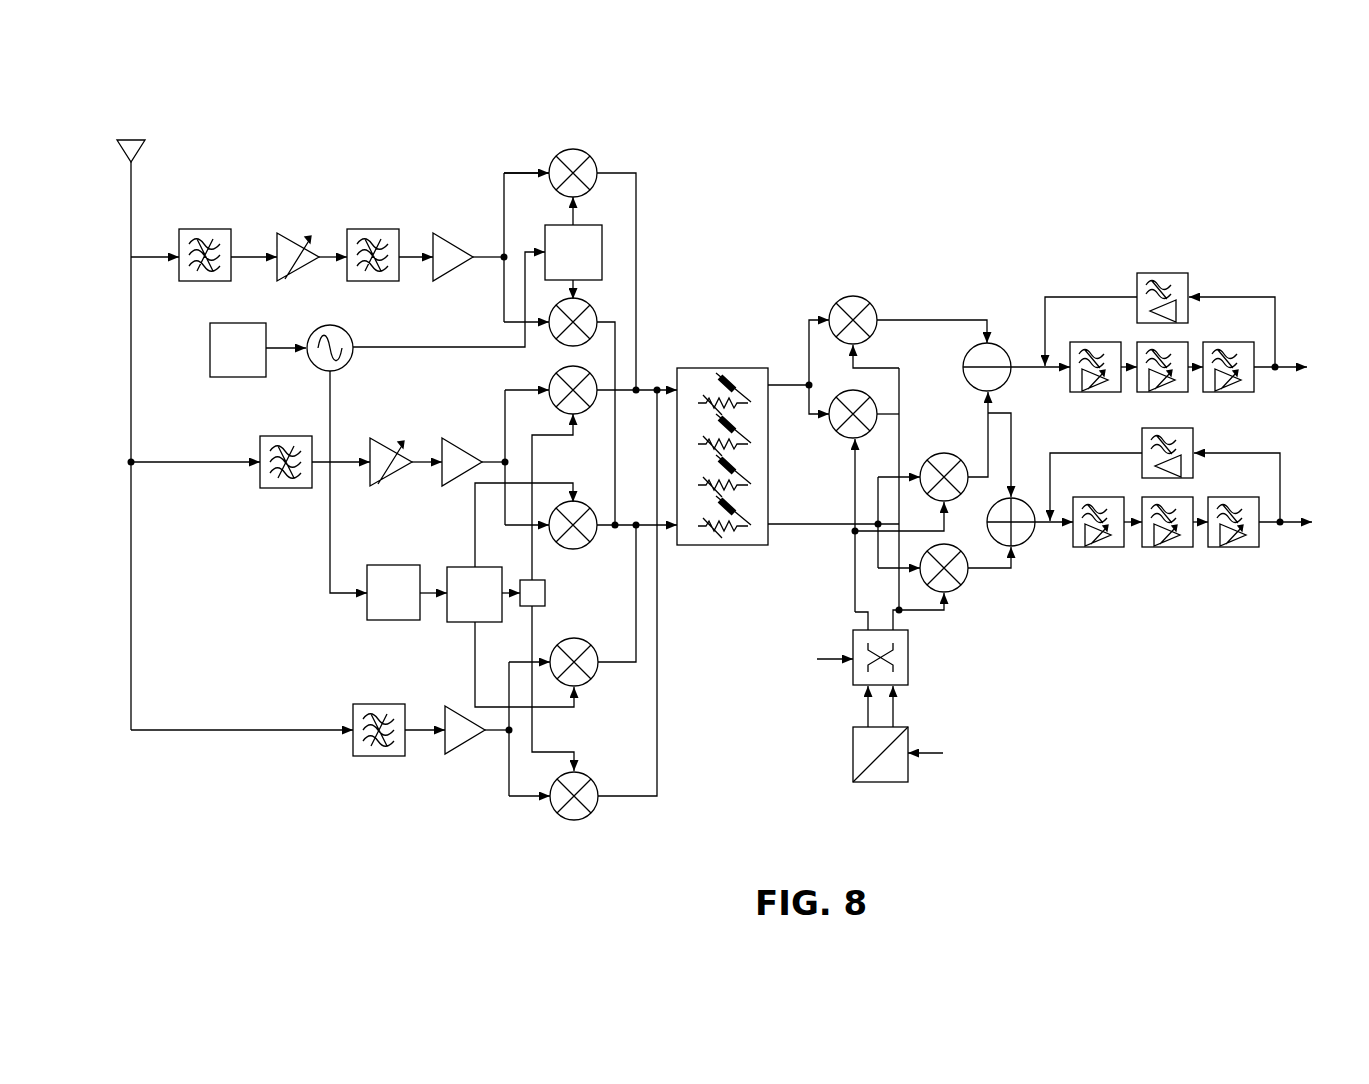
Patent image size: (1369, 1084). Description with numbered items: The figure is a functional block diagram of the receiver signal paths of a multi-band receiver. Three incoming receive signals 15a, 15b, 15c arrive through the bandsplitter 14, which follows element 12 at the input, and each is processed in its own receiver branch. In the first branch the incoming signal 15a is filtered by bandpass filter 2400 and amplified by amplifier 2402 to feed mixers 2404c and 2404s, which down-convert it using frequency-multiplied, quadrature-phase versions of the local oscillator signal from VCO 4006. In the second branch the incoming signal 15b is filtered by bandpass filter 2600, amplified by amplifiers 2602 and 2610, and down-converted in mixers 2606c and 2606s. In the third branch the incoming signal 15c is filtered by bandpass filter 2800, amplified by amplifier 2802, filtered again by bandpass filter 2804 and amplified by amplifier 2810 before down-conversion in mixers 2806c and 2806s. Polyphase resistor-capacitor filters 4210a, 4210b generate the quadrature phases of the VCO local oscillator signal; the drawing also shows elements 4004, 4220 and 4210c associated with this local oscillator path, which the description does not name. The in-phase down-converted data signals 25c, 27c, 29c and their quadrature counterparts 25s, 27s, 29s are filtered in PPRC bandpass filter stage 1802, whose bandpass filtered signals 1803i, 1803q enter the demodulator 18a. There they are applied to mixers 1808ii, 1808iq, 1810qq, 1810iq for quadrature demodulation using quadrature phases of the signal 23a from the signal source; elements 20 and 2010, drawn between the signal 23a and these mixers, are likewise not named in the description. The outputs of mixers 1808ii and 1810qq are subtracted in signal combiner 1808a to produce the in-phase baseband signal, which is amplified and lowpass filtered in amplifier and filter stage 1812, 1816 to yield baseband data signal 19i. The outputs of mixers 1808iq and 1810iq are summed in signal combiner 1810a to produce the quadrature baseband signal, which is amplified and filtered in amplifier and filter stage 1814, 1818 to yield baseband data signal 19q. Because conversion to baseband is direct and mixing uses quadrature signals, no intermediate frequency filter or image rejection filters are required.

The antenna 12 is at (127, 139).
The bandsplitter 14 is at (131, 437).
The incoming receive signal 15a is at (190, 730).
The incoming receive signal 15b is at (152, 462).
The incoming receive signal 15c is at (148, 257).
The bandpass filter 2800 is at (204, 229).
The amplifier 2802 is at (300, 233).
The bandpass filter 2804 is at (372, 229).
The amplifier 2810 is at (452, 233).
The mixer 2806c is at (590, 153).
The mixer 2806s is at (592, 306).
The in-phase frequency down-converted data signal 29c is at (613, 173).
The quadrature frequency down-converted data signal 29s is at (604, 333).
The polyphase resistor-capacitor filter 4210a is at (602, 259).
The RF PLL 4004 is at (232, 377).
The VCO 4006 is at (346, 332).
The bandpass filter 2600 is at (285, 436).
The amplifier 2602 is at (408, 470).
The amplifier 2610 is at (470, 455).
The mixer 2606c is at (556, 376).
The mixer 2606s is at (585, 502).
The in-phase frequency down-converted data signal 27c is at (606, 402).
The quadrature frequency down-converted data signal 27s is at (606, 535).
The frequency doubler 4220 is at (368, 565).
The polyphase resistor-capacitor filter 4210b is at (485, 622).
The cosine output node 4210c is at (545, 606).
The bandpass filter 2400 is at (375, 756).
The amplifier 2402 is at (452, 754).
The mixer 2404s is at (588, 684).
The mixer 2404c is at (576, 820).
The quadrature frequency down-converted data signal 25s is at (630, 662).
The in-phase frequency down-converted data signal 25c is at (640, 796).
The PPRC bandpass filter stage 1802 is at (737, 545).
The bandpass filtered signal 1803i is at (782, 385).
The bandpass filtered signal 1803q is at (800, 524).
The demodulator 18a is at (957, 288).
The mixer 1808ii is at (866, 298).
The mixer 1808iq is at (838, 436).
The signal combiner 1808a is at (969, 354).
The mixer 1810qq is at (952, 443).
The mixer 1810iq is at (960, 590).
The signal combiner 1810a is at (1028, 540).
The band switch 2010 is at (908, 662).
The phase shifter 0/90 degrees 20 is at (886, 782).
The signal 23a is at (930, 753).
The amplifier and filter stage 1812 is at (1300, 283).
The amplifier and filter stage 1816 is at (1160, 320).
The amplifier and filter stage 1814 is at (1305, 441).
The amplifier and filter stage 1818 is at (1165, 475).
The baseband data signal 19i is at (1290, 360).
The baseband data signal 19q is at (1292, 516).